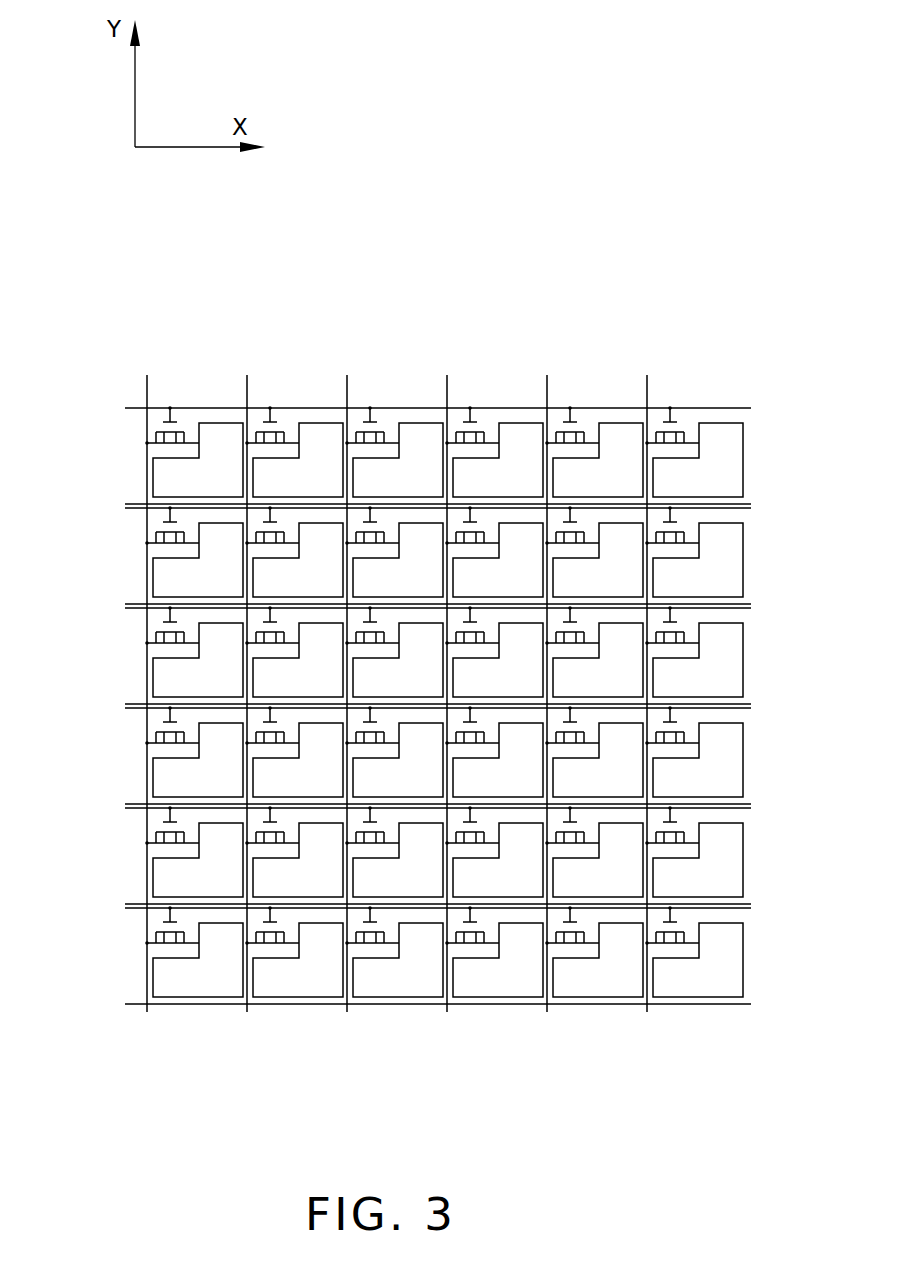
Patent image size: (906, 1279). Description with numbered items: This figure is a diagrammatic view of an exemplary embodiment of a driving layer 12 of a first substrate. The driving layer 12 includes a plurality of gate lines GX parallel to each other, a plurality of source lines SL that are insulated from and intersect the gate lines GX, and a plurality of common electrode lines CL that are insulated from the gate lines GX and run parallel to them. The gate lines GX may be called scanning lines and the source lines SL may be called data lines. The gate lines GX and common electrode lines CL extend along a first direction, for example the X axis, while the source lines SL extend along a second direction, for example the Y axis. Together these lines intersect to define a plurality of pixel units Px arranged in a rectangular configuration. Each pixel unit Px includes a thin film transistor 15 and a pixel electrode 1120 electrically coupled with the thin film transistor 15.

The array substrate 12 is at (512, 228).
The gate line GX is at (217, 407).
The source line SL is at (147, 385).
The pixel unit Px is at (147, 459).
The common electrode line CL is at (140, 505).
The thin film transistor 15 is at (150, 517).
The pixel electrode 1120 is at (167, 580).